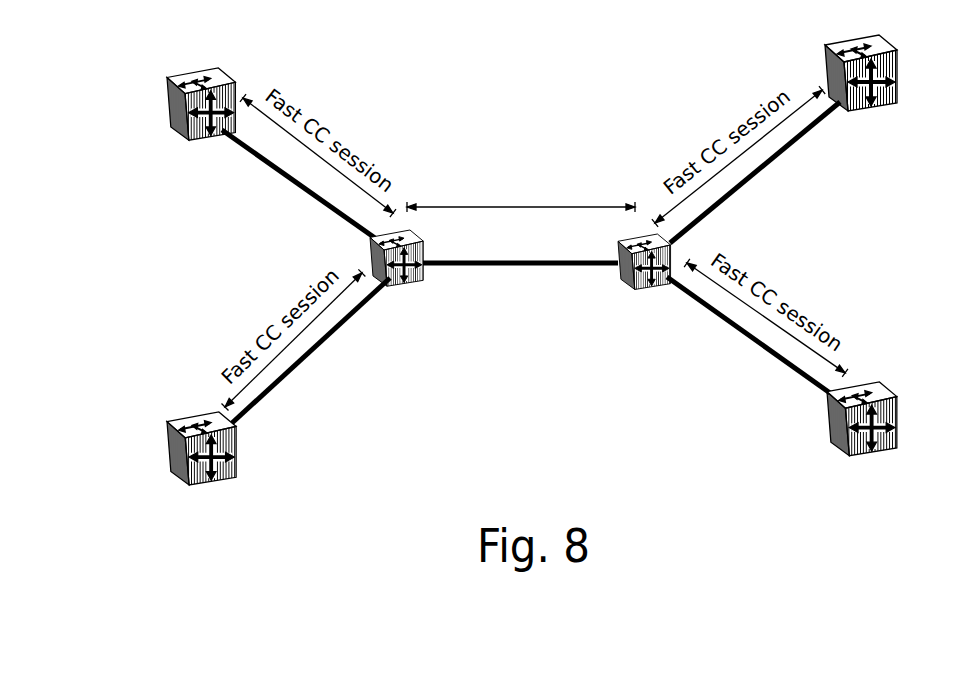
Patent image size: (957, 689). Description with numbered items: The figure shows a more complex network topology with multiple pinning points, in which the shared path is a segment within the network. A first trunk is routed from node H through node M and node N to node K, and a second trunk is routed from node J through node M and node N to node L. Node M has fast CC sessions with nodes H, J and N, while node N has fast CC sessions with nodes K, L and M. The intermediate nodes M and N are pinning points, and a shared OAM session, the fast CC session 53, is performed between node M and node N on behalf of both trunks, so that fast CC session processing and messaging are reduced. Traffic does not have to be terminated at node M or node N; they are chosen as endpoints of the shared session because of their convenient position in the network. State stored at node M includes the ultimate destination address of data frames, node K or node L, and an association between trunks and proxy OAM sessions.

The fast CC session between nodes M and N 53 is at (604, 205).
The node H is at (201, 95).
The node J is at (211, 448).
The node K is at (870, 73).
The node L is at (871, 419).
The node M is at (399, 266).
The node N is at (644, 270).